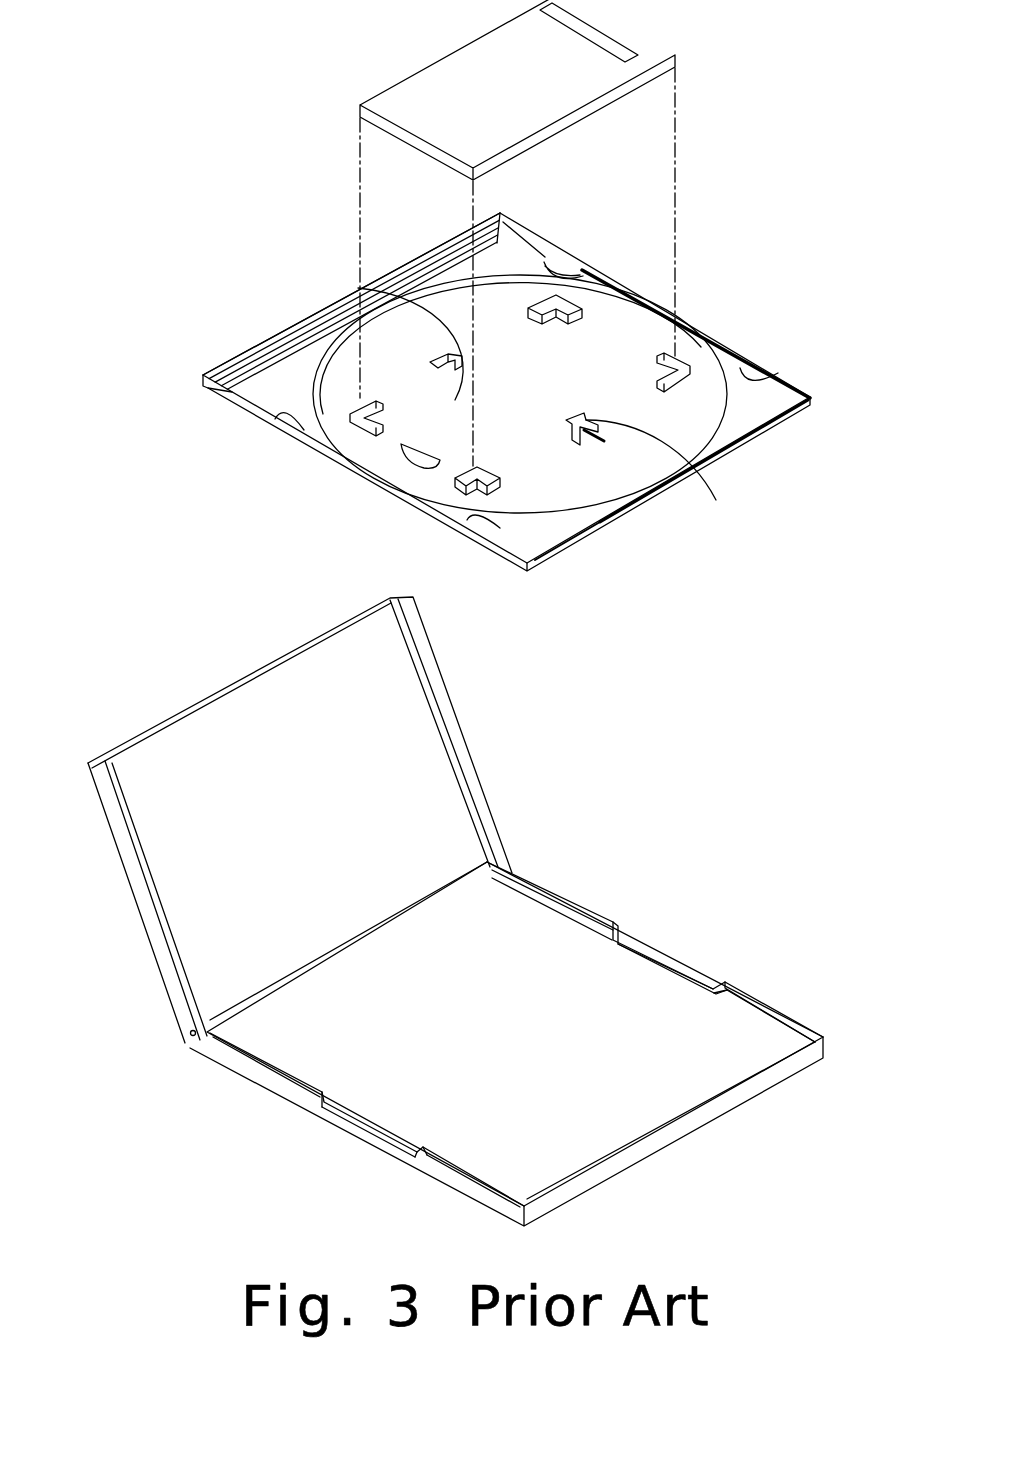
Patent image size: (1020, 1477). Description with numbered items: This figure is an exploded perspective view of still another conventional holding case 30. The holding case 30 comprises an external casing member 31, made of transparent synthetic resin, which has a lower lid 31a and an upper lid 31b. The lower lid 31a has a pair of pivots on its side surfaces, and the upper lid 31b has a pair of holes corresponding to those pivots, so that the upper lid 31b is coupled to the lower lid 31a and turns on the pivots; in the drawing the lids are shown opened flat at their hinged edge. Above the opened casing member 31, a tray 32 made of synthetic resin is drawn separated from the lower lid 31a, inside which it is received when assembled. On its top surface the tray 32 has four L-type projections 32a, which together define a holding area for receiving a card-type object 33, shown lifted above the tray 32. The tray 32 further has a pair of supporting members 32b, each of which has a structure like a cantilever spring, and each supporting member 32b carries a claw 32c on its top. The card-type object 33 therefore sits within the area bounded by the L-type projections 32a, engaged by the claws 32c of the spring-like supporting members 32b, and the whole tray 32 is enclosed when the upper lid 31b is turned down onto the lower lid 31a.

The holding case 30 is at (172, 272).
The external casing member 31 is at (645, 712).
The lower lid 31a is at (557, 903).
The upper lid 31b is at (477, 767).
The tray 32 is at (556, 550).
The L-type projections 32a is at (318, 495).
The supporting members 32b is at (358, 288).
The claw 32c is at (456, 372).
The card-type object 33 is at (402, 78).